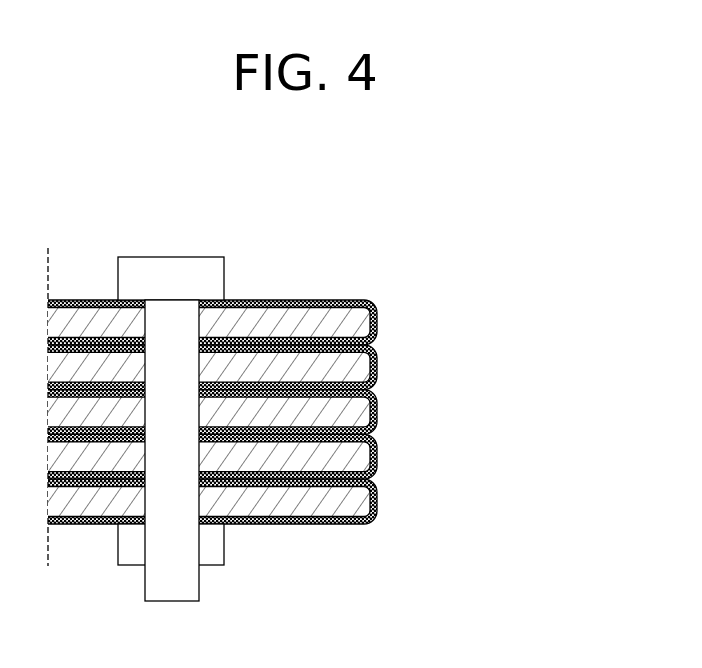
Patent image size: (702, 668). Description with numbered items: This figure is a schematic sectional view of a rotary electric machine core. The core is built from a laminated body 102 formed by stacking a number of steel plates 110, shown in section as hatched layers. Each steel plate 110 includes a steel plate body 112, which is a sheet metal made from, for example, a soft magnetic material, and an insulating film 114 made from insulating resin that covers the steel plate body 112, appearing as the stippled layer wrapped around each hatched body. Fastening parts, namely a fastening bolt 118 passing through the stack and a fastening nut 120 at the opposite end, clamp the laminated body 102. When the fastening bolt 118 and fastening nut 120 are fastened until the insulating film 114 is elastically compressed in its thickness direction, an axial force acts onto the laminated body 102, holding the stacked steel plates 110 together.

The laminated body 102 is at (309, 372).
The steel plate 110 is at (306, 365).
The steel plate body 112 is at (260, 403).
The insulating film 114 is at (353, 296).
The fastening bolt 118 is at (180, 257).
The fastening nut 120 is at (225, 546).